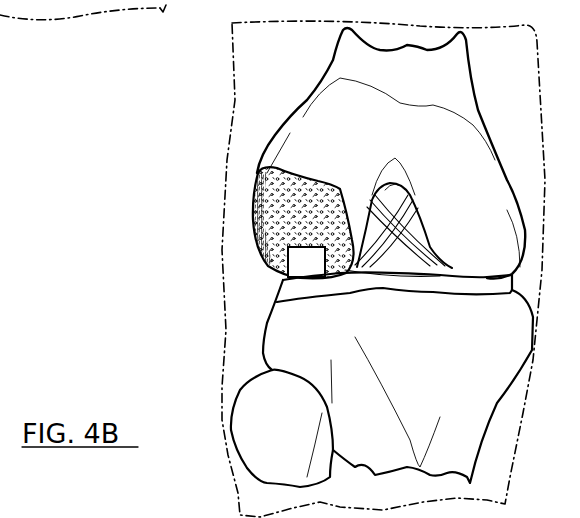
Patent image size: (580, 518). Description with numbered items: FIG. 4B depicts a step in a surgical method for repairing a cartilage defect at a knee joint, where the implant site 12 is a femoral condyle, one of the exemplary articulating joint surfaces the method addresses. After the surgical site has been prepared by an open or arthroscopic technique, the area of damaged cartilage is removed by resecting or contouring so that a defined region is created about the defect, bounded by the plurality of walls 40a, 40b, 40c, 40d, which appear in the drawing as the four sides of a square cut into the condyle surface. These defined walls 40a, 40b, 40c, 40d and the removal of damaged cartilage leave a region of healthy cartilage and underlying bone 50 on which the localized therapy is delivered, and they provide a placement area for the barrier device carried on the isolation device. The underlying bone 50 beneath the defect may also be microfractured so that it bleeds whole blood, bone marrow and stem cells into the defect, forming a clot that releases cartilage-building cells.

The implant site 12 is at (252, 255).
The underlying bone 50 is at (297, 193).
The wall 40a is at (297, 267).
The wall 40b is at (304, 247).
The wall 40c is at (318, 260).
The wall 40d is at (306, 270).